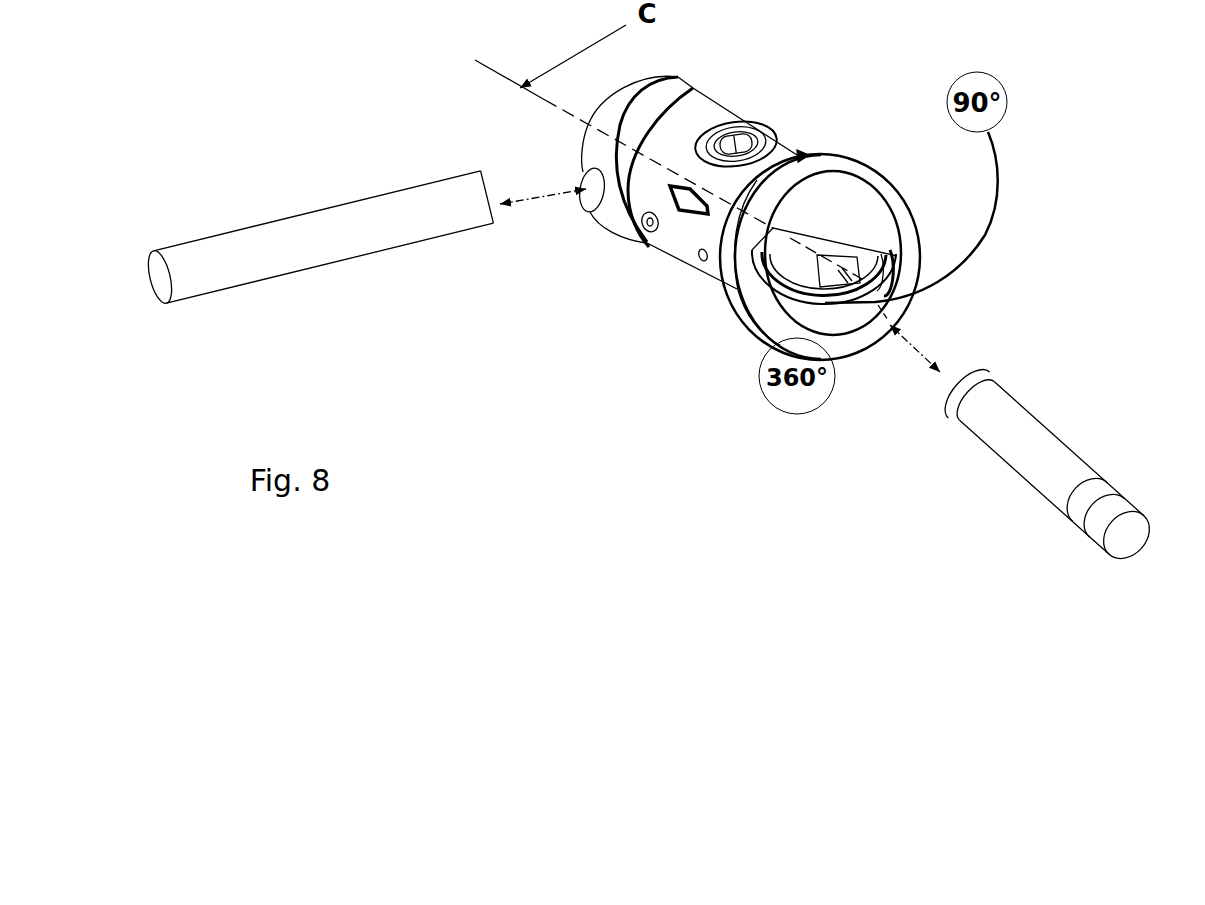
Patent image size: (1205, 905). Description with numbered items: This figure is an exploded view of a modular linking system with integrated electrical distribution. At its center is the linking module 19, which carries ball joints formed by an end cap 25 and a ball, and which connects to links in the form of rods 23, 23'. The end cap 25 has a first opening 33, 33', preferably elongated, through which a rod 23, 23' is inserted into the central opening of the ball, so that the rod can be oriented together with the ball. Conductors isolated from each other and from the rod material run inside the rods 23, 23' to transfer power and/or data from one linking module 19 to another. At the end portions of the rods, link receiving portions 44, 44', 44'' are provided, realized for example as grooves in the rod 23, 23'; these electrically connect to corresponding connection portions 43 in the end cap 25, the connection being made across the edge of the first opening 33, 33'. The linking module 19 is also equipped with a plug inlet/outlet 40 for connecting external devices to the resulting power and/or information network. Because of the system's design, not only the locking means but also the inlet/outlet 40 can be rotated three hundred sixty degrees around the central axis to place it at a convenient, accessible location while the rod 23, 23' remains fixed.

The linking module 19 is at (630, 251).
The rod 23 is at (1032, 475).
The rod 23' is at (319, 264).
The end cap 25 is at (865, 208).
The first opening 33 is at (779, 318).
The first opening 33' is at (508, 228).
The inlet/outlet 40 is at (678, 212).
The connection portion 43 is at (893, 256).
The link receiving portion 44 is at (990, 343).
The link receiving portion 44' is at (1087, 422).
The link receiving portion 44'' is at (1115, 452).